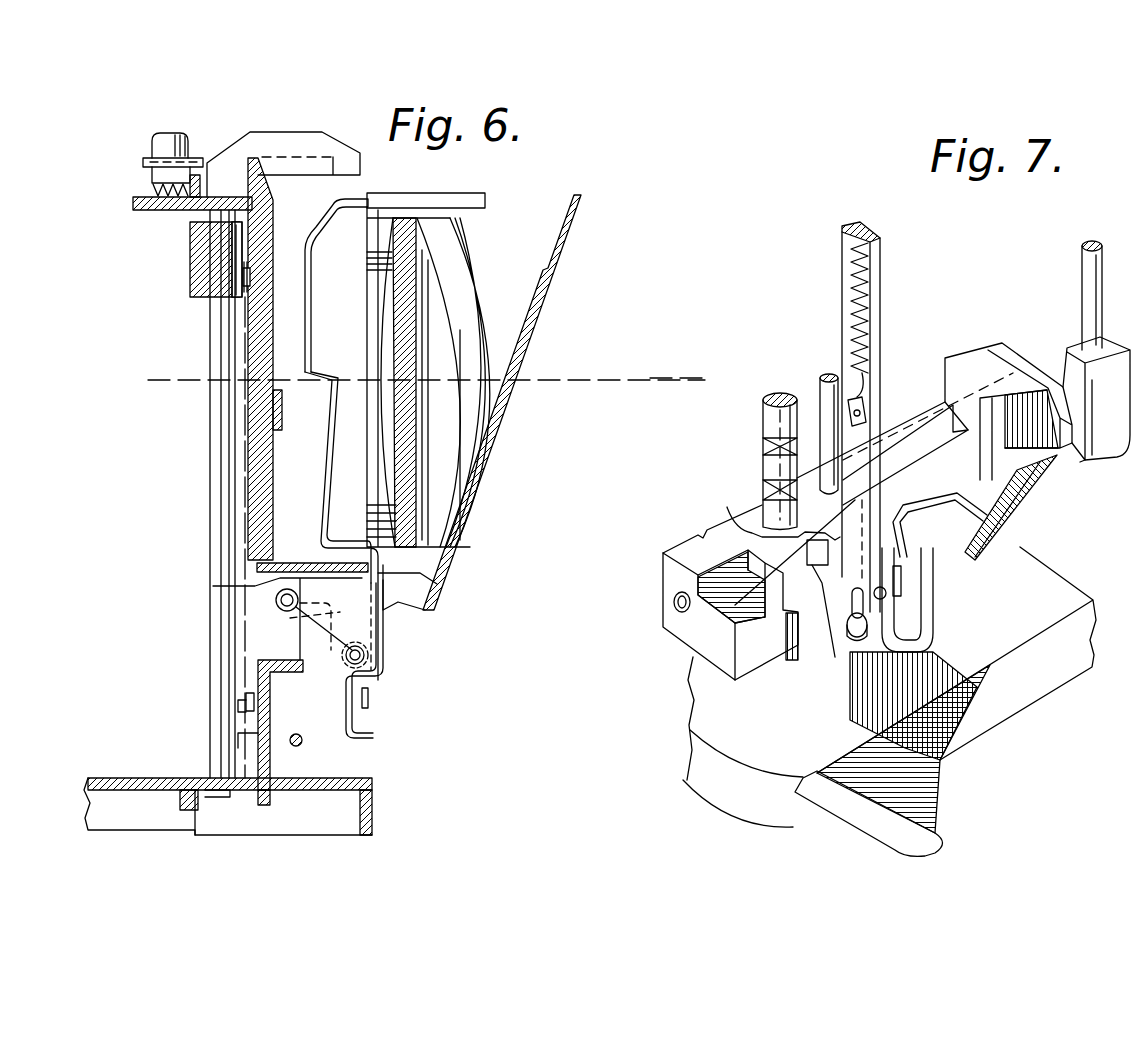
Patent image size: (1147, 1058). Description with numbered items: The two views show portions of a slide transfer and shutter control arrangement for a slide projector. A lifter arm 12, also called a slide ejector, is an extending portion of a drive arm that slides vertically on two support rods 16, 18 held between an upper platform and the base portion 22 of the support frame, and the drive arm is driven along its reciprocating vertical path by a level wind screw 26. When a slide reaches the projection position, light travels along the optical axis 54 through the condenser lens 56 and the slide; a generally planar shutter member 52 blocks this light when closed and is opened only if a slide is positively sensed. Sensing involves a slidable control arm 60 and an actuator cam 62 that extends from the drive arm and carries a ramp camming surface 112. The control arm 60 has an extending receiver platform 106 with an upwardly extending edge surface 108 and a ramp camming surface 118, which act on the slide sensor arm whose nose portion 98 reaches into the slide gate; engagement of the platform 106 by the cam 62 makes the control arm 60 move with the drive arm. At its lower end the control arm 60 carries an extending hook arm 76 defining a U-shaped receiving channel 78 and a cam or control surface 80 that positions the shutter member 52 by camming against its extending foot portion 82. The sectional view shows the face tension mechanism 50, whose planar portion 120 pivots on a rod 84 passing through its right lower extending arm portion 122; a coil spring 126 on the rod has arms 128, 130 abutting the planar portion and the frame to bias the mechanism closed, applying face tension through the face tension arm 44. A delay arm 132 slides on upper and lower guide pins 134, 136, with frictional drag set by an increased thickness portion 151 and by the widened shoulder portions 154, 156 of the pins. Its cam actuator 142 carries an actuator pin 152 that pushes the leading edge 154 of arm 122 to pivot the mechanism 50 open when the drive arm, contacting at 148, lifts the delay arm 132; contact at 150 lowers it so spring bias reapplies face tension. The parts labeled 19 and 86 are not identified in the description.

In FIG. 7, the lifter arm 12 is at (1010, 355).
In FIG. 7, the support rod 16 is at (1100, 287).
In FIG. 7, the support rod 18 is at (820, 390).
In FIG. 7, the block face 19 is at (1080, 463).
In FIG. 7, the base portion 22 is at (1055, 590).
In FIG. 7, the level wind screw 26 is at (763, 423).
In FIG. 6, the face tension arm 44 is at (327, 228).
In FIG. 6, the face tension mechanism 50 is at (394, 657).
In FIG. 6, the shutter member 52 is at (550, 289).
In FIG. 7, the shutter member 52 is at (1037, 502).
In FIG. 6, the optical axis 54 is at (153, 382).
In FIG. 6, the condenser lens 56 is at (476, 250).
In FIG. 7, the slidable control arm 60 is at (867, 430).
In FIG. 7, the actuator cam 62 is at (735, 512).
In FIG. 7, the hook arm 76 is at (910, 630).
In FIG. 7, the U-shaped receiving channel 78 is at (887, 622).
In FIG. 7, the control surface 80 is at (935, 578).
In FIG. 7, the foot portion 82 is at (893, 520).
In FIG. 6, the rod 84 is at (362, 658).
In FIG. 6, the lens bracket 86 is at (333, 560).
In FIG. 6, the nose portion 98 is at (274, 230).
In FIG. 7, the receiver platform 106 is at (735, 605).
In FIG. 7, the edge surface 108 is at (815, 652).
In FIG. 7, the ramp camming surface 112 is at (827, 533).
In FIG. 7, the ramp camming surface 118 is at (817, 655).
In FIG. 6, the planar portion 120 is at (382, 628).
In FIG. 6, the right lower extending arm portion 122 is at (326, 645).
In FIG. 6, the coil spring 126 is at (346, 648).
In FIG. 6, the extending arm 128 is at (368, 702).
In FIG. 6, the extending arm 130 is at (372, 735).
In FIG. 6, the delay arm 132 is at (235, 345).
In FIG. 6, the upper guide pin 134 is at (237, 284).
In FIG. 6, the lower guide pin 136 is at (246, 703).
In FIG. 6, the cam actuator 142 is at (262, 612).
In FIG. 7, the drive arm contact portion 148 is at (775, 490).
In FIG. 7, the drive arm contact portion 150 is at (828, 645).
In FIG. 6, the increased thickness portion 151 is at (250, 518).
In FIG. 6, the actuator pin 152 is at (276, 600).
In FIG. 6, the widened shoulder portion 154 is at (247, 302).
In FIG. 6, the widened shoulder portion 156 is at (272, 722).